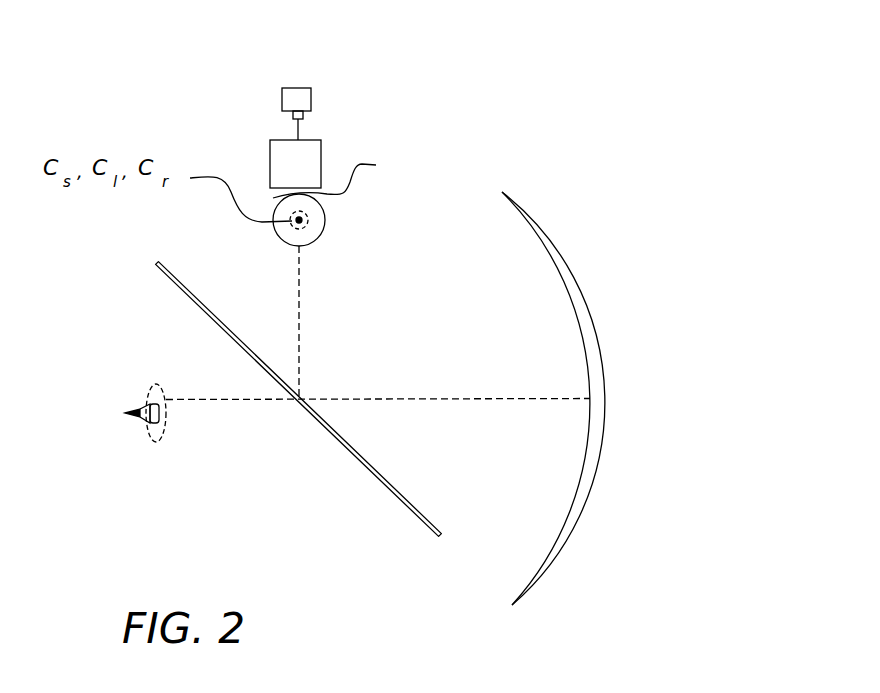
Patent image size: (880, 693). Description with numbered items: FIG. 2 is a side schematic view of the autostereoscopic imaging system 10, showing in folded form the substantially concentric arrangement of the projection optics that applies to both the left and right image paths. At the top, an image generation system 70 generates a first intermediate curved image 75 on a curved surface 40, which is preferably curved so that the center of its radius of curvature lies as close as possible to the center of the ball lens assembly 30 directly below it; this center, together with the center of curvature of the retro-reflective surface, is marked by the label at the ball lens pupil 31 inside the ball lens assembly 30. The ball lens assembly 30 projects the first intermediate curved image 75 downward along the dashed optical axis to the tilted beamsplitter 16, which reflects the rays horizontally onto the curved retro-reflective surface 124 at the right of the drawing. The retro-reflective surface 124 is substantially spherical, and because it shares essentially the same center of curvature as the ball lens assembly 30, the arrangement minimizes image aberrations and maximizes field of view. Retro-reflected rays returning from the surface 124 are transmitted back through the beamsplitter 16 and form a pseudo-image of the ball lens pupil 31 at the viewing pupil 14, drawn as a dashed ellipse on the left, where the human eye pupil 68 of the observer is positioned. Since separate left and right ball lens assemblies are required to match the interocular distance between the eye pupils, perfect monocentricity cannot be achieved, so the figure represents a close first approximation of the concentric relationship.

The autostereoscopic imaging system 10 is at (589, 347).
The viewing pupil 14 is at (165, 427).
The beamsplitter 16 is at (360, 462).
The ball lens assembly 30 is at (318, 238).
The ball lens pupil 31 is at (307, 213).
The curved surface 40 is at (358, 174).
The first intermediate curved image 75 is at (358, 174).
The human eye pupil 68 is at (135, 417).
The image generation system 70 is at (352, 99).
The retro-reflective surface 124 is at (582, 507).